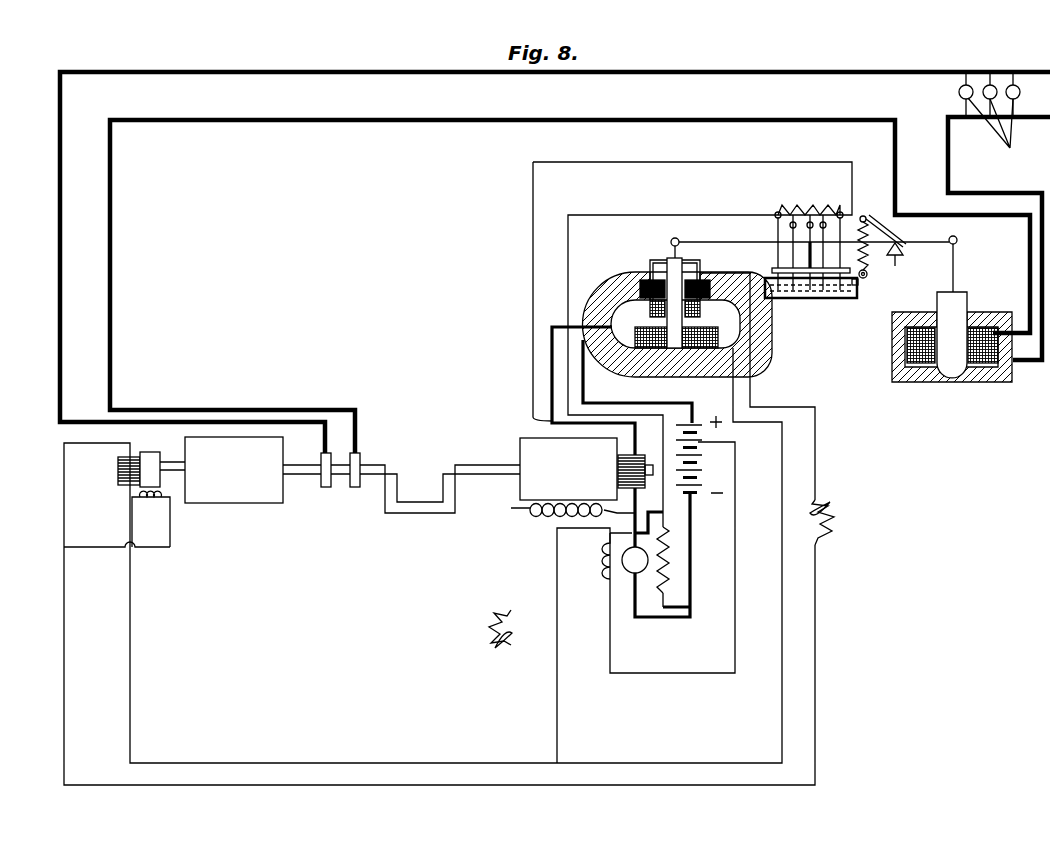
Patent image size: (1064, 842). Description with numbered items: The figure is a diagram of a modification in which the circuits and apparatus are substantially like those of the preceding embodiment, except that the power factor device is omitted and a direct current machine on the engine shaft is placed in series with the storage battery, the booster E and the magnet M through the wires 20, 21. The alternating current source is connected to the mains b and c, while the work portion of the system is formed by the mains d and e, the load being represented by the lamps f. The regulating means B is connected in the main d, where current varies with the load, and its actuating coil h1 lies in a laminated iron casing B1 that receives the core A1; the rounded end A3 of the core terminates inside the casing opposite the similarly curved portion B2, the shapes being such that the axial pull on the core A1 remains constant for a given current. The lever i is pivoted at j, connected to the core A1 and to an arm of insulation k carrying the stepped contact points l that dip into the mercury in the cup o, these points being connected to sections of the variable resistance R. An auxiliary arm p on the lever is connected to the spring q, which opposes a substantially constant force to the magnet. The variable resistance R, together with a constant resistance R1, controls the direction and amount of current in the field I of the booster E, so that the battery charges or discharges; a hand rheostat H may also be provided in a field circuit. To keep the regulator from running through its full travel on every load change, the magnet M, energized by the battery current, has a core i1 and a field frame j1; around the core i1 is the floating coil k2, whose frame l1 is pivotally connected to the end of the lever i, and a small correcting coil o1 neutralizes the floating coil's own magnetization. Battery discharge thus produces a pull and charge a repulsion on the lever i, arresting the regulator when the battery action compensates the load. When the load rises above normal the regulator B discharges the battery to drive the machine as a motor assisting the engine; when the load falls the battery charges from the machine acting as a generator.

The main c is at (300, 73).
The main b is at (382, 120).
The main of work circuit d is at (975, 119).
The main of work circuit e is at (988, 72).
The lamps f is at (990, 137).
The variable resistance R is at (802, 210).
The lever i is at (754, 242).
The auxiliary arm p is at (892, 235).
The pivot j is at (898, 252).
The spring q is at (874, 277).
The contact points l is at (822, 277).
The cup o is at (825, 280).
The arm of insulation k is at (843, 282).
The core A1 is at (958, 302).
The coil h1 is at (892, 358).
The rounded end of core A3 is at (950, 370).
The curved portion of casing B2 is at (970, 381).
The laminated iron casing B1 is at (1012, 381).
The regulating means B is at (752, 370).
The field frame j1 is at (745, 372).
The floating coil k2 is at (640, 278).
The frame of floating coil l1 is at (657, 260).
The correcting coil o1 is at (650, 310).
The wire 20 is at (548, 353).
The magnet M is at (689, 315).
The core i1 is at (677, 347).
The wire 21 is at (623, 515).
The field of booster I is at (600, 559).
The booster E is at (623, 572).
The constant resistance R1 is at (668, 553).
The hand rheostat H is at (492, 620).